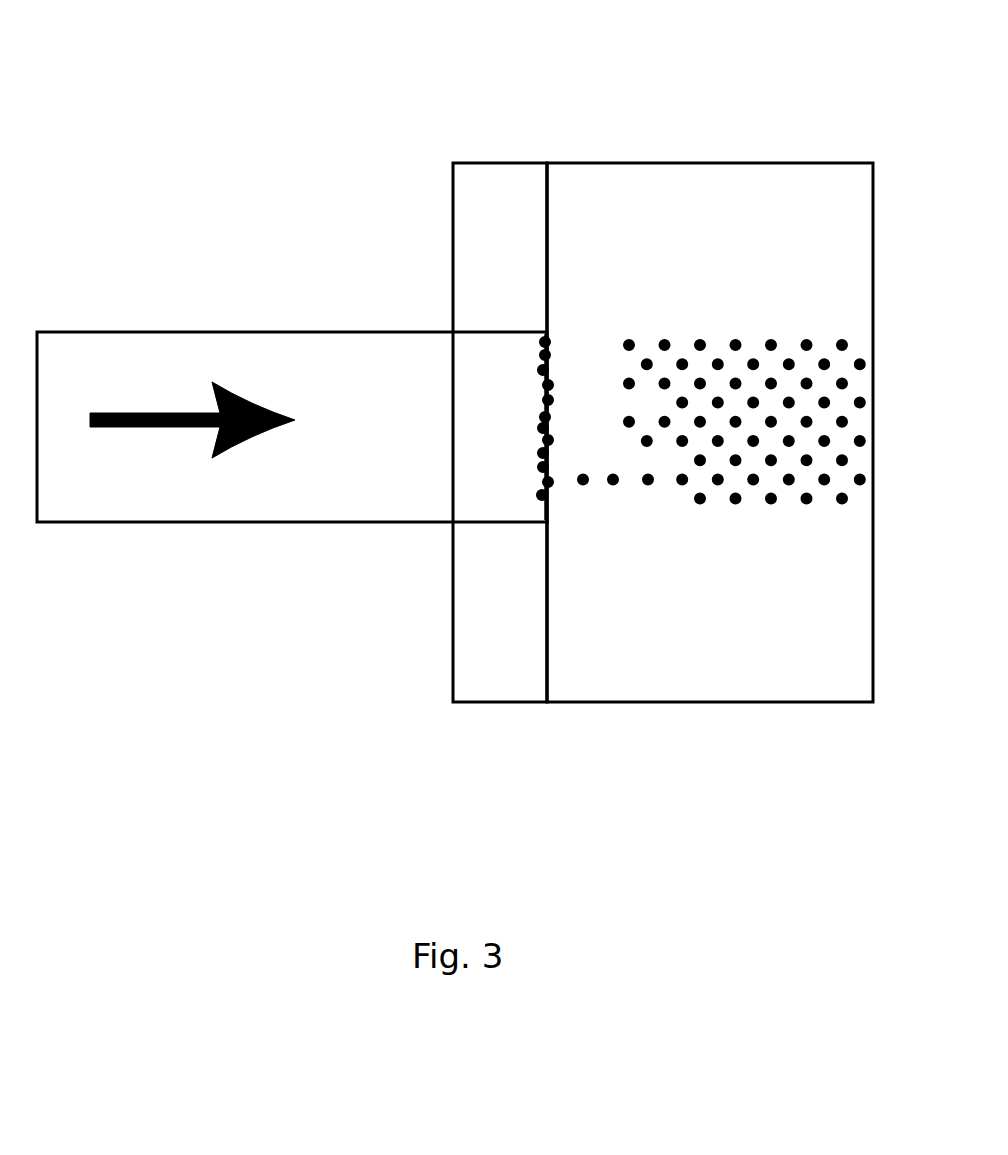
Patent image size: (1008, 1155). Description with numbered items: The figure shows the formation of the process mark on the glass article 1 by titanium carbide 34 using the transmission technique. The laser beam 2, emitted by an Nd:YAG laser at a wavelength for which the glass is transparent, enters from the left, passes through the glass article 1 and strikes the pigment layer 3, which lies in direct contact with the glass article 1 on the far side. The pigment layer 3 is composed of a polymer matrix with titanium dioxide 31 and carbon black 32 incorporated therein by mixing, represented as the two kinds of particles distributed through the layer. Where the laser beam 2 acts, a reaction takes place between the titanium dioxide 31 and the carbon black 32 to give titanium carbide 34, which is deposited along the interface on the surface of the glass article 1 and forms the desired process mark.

The glass article 1 is at (522, 251).
The laser beam 2 is at (434, 438).
The pigment layer 3 is at (746, 578).
The titanium dioxide 31 is at (671, 340).
The carbon black 32 is at (719, 340).
The titanium carbide 34 is at (550, 463).